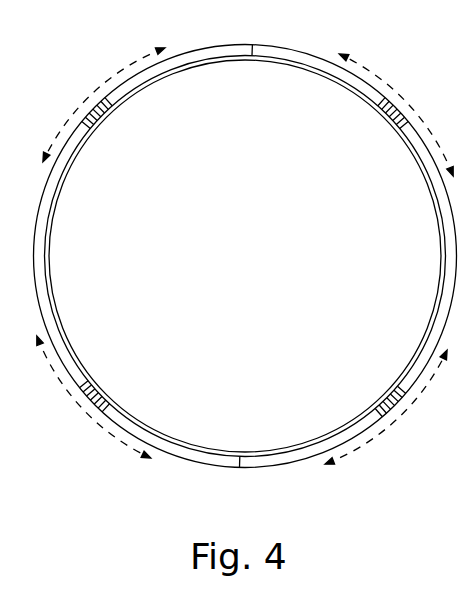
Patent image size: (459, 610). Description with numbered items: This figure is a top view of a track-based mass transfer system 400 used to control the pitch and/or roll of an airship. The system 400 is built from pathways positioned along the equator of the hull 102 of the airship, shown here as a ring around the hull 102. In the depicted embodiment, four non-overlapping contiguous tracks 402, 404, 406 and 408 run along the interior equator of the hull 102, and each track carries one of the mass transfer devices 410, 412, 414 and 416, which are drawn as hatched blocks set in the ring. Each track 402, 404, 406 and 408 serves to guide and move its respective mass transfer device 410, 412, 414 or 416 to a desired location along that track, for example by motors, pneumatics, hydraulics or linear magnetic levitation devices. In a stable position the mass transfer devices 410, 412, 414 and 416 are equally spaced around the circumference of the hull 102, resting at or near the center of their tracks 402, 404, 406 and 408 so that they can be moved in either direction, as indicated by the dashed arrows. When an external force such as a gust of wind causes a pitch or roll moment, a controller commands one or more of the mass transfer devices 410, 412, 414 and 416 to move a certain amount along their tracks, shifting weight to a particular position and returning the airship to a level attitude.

The track-based mass transfer system 400 is at (397, 54).
The track 402 is at (447, 317).
The track 404 is at (437, 196).
The hull 102 is at (245, 256).
The track 406 is at (185, 53).
The track 408 is at (173, 457).
The mass transfer device 410 is at (377, 400).
The mass transfer device 412 is at (385, 122).
The mass transfer device 414 is at (113, 112).
The mass transfer device 416 is at (105, 389).